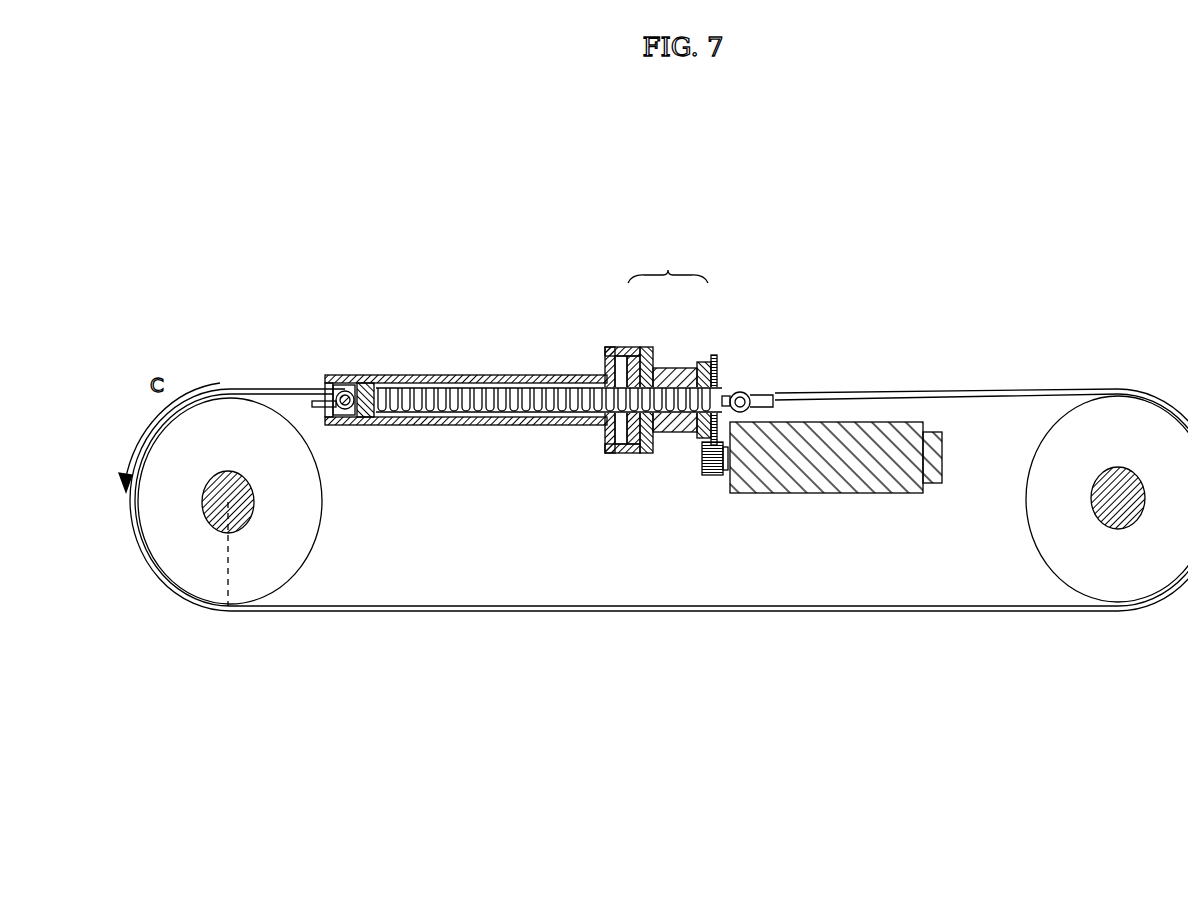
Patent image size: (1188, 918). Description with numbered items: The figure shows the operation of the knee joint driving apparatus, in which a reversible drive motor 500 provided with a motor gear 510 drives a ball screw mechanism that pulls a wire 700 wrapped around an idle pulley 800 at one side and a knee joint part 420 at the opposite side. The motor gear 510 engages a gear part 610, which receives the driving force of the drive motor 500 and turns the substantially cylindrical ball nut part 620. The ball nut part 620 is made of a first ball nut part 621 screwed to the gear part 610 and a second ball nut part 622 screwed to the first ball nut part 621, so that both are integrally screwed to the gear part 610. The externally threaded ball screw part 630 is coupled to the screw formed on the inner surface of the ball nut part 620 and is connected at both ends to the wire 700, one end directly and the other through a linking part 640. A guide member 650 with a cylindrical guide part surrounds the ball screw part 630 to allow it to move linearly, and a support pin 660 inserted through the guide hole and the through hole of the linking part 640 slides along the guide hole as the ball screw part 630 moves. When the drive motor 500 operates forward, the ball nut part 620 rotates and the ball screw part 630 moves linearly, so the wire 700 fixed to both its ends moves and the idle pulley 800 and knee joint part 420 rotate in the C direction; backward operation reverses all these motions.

The knee joint part 420 is at (191, 584).
The idle pulley 800 is at (1115, 584).
The wire 700 is at (290, 391).
The support pin 660 is at (350, 384).
The guide member 650 is at (508, 375).
The linking part 640 is at (364, 418).
The ball screw part 630 is at (551, 394).
The ball nut part 620 is at (663, 349).
The second ball nut part 622 is at (629, 347).
The first ball nut part 621 is at (705, 362).
The gear part 610 is at (718, 360).
The motor gear 510 is at (712, 476).
The drive motor 500 is at (852, 422).